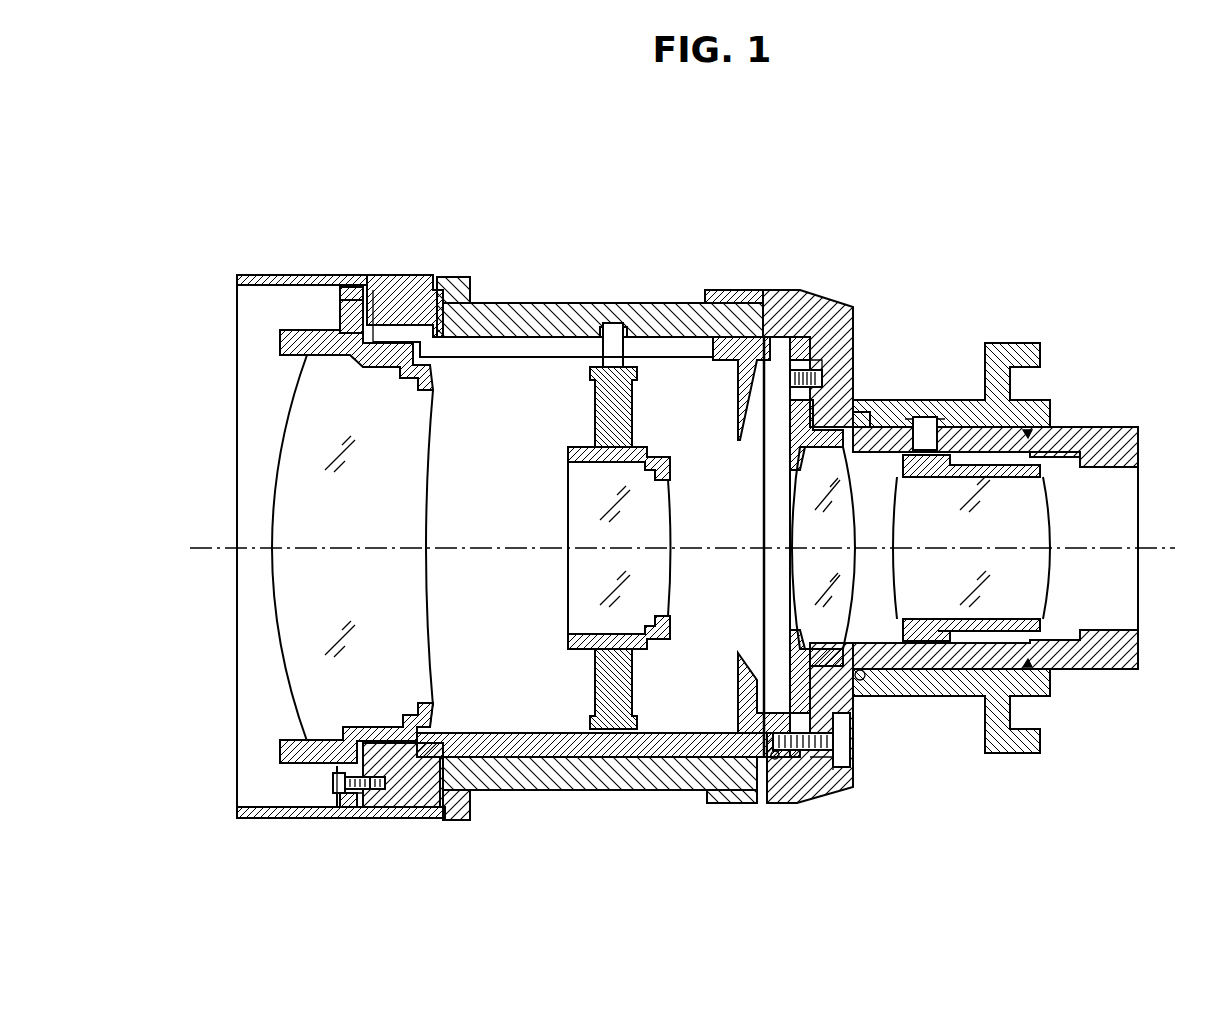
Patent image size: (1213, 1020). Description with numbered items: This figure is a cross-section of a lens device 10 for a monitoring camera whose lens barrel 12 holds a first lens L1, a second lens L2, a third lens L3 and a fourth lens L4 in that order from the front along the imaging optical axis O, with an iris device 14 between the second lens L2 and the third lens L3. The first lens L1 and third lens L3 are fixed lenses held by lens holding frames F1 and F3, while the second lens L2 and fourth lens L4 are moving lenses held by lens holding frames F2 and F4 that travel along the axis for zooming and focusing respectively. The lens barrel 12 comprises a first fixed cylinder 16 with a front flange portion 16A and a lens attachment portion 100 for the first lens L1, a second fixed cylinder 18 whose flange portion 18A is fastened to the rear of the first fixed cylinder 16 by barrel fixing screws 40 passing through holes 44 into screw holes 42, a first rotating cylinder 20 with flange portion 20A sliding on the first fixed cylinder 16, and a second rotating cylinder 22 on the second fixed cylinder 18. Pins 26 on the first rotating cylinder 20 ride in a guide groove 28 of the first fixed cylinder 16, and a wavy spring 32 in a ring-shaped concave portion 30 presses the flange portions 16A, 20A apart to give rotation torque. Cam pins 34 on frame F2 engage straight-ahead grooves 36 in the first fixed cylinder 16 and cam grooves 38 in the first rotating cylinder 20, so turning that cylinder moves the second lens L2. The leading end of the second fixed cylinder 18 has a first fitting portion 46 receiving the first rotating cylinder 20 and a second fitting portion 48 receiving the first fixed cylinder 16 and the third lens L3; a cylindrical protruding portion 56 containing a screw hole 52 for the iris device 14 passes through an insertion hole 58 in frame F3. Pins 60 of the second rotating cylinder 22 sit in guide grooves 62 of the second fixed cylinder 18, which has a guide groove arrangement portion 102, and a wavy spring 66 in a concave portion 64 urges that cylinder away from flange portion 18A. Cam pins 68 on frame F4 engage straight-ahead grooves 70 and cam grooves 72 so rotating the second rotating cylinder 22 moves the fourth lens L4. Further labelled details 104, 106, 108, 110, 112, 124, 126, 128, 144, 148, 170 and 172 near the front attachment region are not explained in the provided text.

The lens device 10 is at (881, 233).
The lens barrel 12 is at (243, 250).
The lens attachment portion 100 is at (268, 305).
The guide groove arrangement portion 102 is at (343, 298).
The gap 110 is at (374, 345).
The ring portion 112 is at (345, 320).
The flange portion 16A is at (405, 285).
The flange portion 20A is at (455, 290).
The first rotating cylinder 20 is at (493, 315).
The cam grooves 38 is at (600, 326).
The cam pins 34 is at (613, 325).
The straight-ahead grooves 36 is at (668, 347).
The guide groove 28 is at (738, 345).
The pins 26 is at (752, 340).
The cylindrical protruding portion 56 is at (797, 365).
The flange portion 18A is at (823, 300).
The insertion hole 58 is at (820, 367).
The screw holes 52 is at (822, 378).
The cam grooves 72 is at (928, 415).
The cam pins 68 is at (922, 416).
The pins 60 is at (1030, 432).
The guide grooves 62 is at (1040, 447).
The wavy spring 66 is at (863, 422).
The straight-ahead grooves 70 is at (952, 470).
The first lens L1 is at (292, 420).
The second lens L2 is at (568, 498).
The third lens L3 is at (795, 500).
The fourth lens L4 is at (1048, 514).
The lens holding frame F1 is at (290, 342).
The lens holding frame F2 is at (595, 410).
The lens holding frame F3 is at (793, 655).
The lens holding frame F4 is at (1045, 630).
The iris device 14 is at (764, 586).
The imaging optical axis O is at (671, 548).
The engaging portion 172 is at (365, 757).
The flange portion 104 is at (380, 745).
The step portion 108 is at (440, 725).
The bottom wall 106 is at (240, 806).
The adjusting screw 144 is at (335, 785).
The pocket 124 is at (326, 796).
The spring member 128 is at (343, 800).
The bottom portion 126 is at (355, 810).
The screw head 170 is at (375, 790).
The threaded hole 148 is at (388, 790).
The wavy spring 32 is at (440, 800).
The ring-shaped concave portion 30 is at (467, 795).
The first fixed cylinder 16 is at (548, 757).
The first fitting portion 46 is at (710, 790).
The second fitting portion 48 is at (775, 758).
The screw holes 42 is at (795, 752).
The holes 44 is at (825, 770).
The barrel fixing screws 40 is at (846, 740).
The ring-shaped concave portion 64 is at (862, 680).
The second rotating cylinder 22 is at (950, 690).
The second fixed cylinder 18 is at (1105, 667).